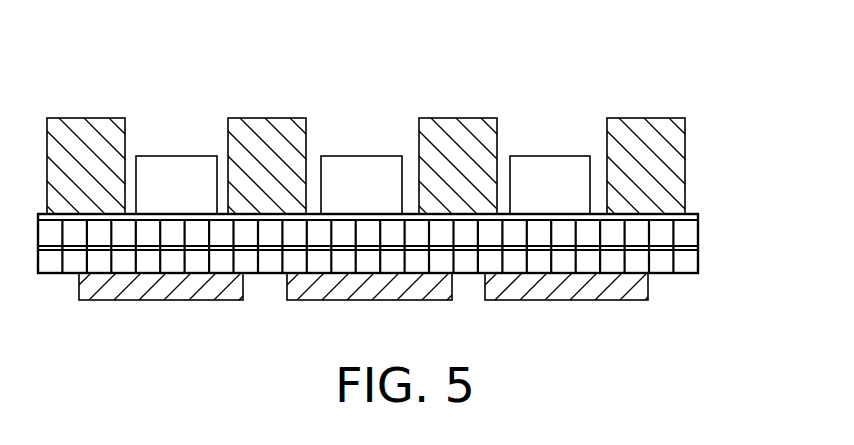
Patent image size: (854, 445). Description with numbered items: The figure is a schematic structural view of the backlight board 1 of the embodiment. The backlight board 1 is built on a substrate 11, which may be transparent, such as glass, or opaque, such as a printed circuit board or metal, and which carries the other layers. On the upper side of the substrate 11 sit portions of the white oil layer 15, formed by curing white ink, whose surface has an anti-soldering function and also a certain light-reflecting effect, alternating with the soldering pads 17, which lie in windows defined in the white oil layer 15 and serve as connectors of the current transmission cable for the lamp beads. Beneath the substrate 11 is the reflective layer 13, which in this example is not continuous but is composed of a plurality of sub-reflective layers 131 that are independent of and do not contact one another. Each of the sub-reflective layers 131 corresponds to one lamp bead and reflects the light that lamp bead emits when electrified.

The backlight board 1 is at (122, 82).
The substrate 11 is at (700, 216).
The reflective layer 13 is at (398, 295).
The sub-reflective layers 131 is at (152, 298).
The white oil layer 15 is at (627, 118).
The soldering pads 17 is at (536, 157).